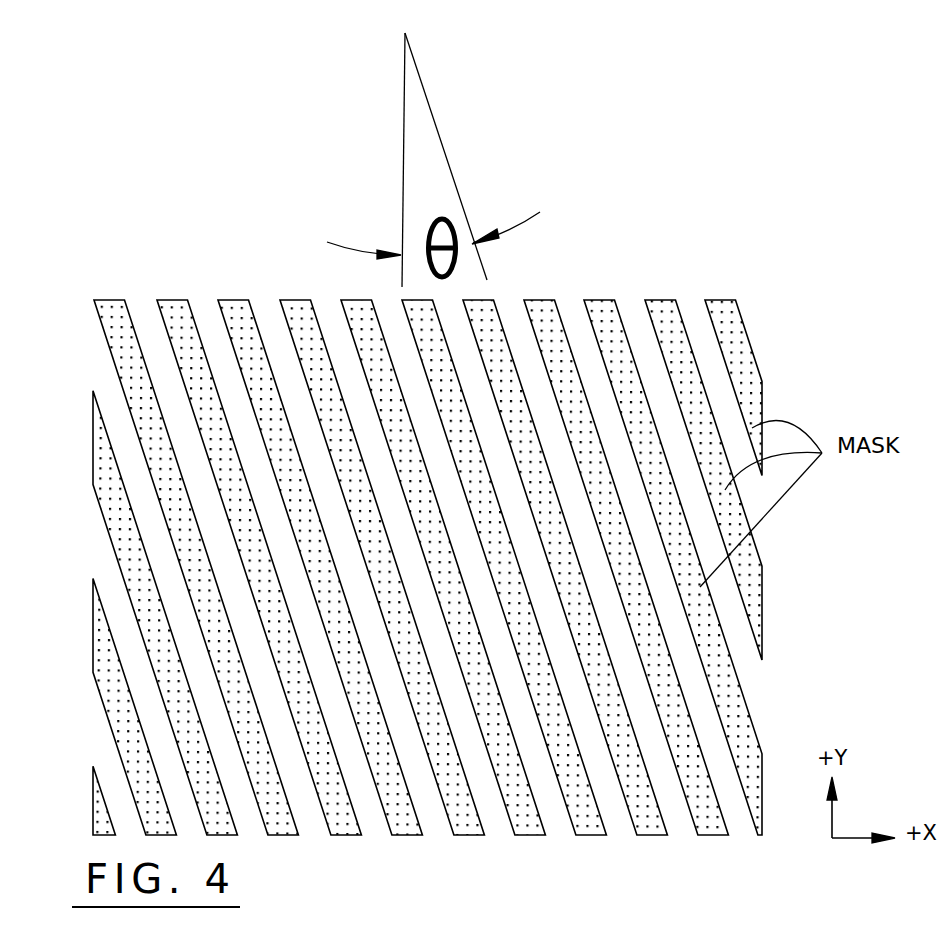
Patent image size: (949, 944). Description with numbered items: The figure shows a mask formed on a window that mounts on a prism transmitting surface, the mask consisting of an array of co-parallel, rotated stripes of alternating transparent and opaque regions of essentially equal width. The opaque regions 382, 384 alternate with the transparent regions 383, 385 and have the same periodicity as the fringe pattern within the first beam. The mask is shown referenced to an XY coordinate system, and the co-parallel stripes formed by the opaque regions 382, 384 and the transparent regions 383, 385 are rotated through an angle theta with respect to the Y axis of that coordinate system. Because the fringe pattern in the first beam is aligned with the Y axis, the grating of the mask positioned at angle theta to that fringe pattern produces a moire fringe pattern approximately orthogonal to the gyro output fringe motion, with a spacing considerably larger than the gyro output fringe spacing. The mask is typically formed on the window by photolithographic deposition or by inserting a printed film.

The opaque region 382 is at (598, 310).
The transparent region 383 is at (632, 315).
The opaque region 384 is at (658, 315).
The transparent region 385 is at (690, 315).